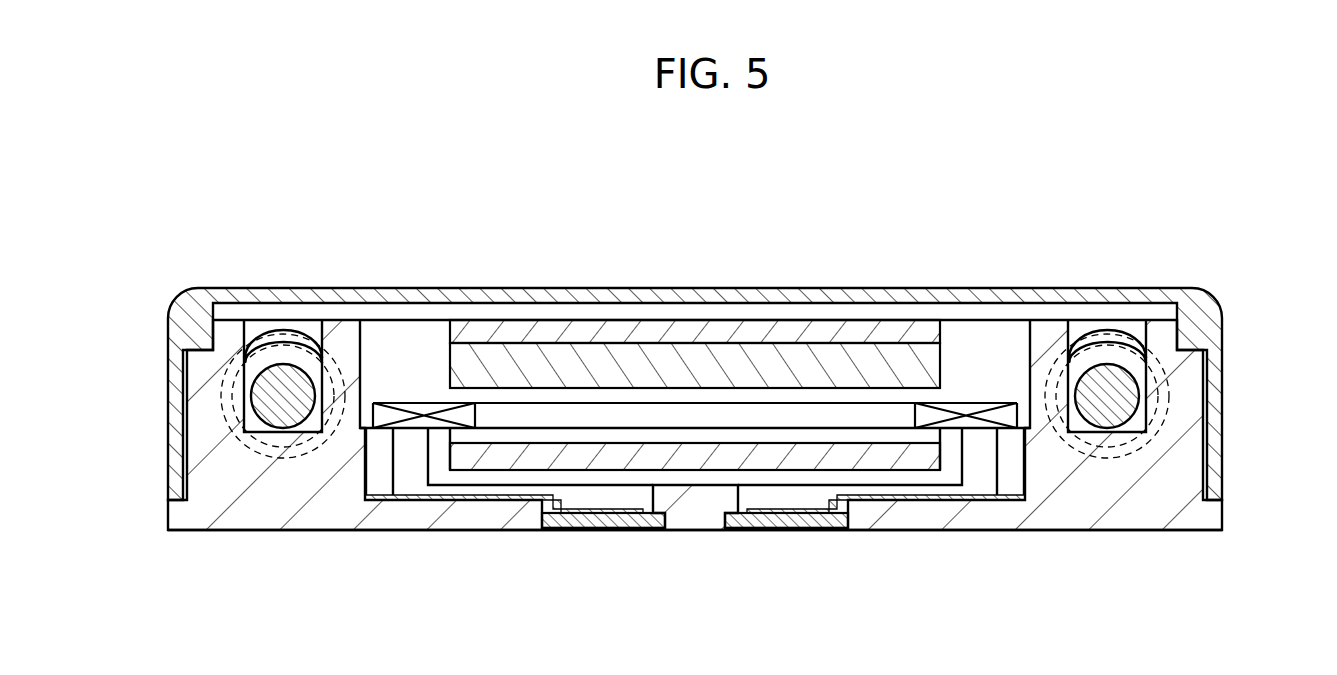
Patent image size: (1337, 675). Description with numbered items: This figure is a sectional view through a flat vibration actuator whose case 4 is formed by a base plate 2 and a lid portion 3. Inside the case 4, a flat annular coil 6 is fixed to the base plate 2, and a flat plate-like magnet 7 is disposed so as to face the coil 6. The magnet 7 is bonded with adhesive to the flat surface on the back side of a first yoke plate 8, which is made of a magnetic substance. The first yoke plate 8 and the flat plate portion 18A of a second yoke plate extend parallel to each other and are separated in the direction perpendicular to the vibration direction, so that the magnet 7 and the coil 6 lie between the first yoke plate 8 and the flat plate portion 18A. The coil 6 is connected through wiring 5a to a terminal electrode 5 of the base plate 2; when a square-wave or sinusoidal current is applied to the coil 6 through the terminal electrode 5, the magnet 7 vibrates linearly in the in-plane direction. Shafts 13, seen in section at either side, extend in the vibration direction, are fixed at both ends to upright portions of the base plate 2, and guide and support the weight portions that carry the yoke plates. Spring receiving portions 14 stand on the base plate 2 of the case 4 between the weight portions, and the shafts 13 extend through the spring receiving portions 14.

The base plate 2 is at (724, 509).
The lid portion 3 is at (1217, 432).
The case 4 is at (747, 425).
The terminal electrode 5 is at (606, 520).
The wiring 5a is at (437, 497).
The coil 6 is at (957, 410).
The magnet 7 is at (853, 365).
The first yoke plate 8 is at (735, 332).
The shafts 13 is at (278, 378).
The spring receiving portions 14 is at (343, 333).
The flat plate portion 18A is at (697, 457).